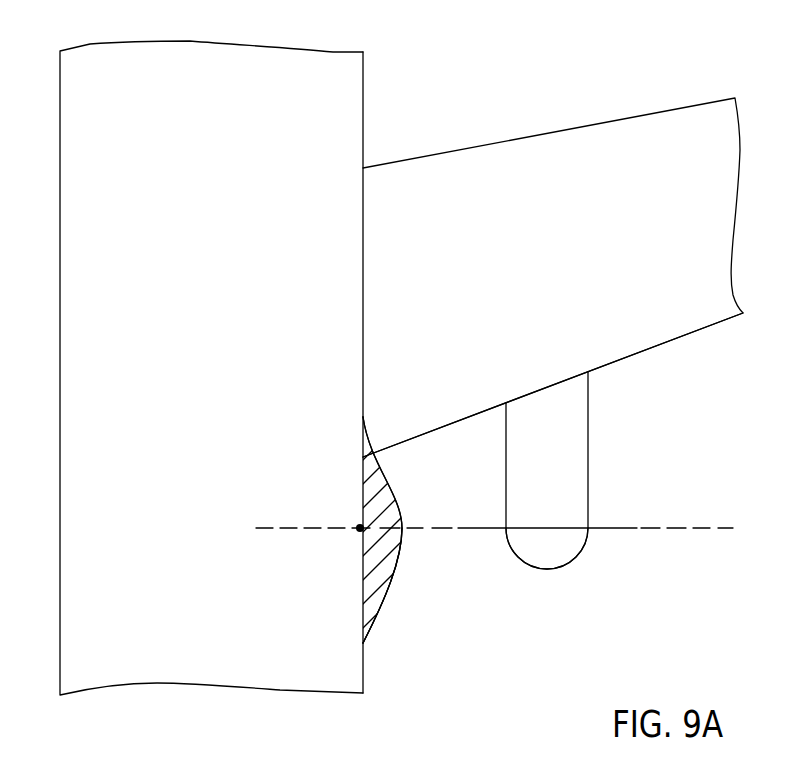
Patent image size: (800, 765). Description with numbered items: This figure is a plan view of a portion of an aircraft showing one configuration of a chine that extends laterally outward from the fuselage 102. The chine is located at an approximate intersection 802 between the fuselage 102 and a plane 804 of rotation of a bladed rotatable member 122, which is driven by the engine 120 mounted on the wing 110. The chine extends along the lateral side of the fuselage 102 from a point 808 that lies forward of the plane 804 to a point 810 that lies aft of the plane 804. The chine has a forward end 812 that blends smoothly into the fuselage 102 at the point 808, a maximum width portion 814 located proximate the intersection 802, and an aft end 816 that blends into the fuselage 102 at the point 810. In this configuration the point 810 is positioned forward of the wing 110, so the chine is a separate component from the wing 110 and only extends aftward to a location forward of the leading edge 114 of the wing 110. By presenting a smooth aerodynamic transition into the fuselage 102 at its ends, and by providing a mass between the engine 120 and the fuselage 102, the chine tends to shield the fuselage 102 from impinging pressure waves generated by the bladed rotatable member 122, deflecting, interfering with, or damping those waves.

The fuselage 102 is at (225, 484).
The wing 110 is at (618, 332).
The leading edge 114 is at (685, 338).
The engine 120 is at (588, 483).
The bladed rotatable member 122 is at (603, 528).
The intersection 802 is at (357, 533).
The plane of rotation 804 is at (702, 528).
The point forward of plane 808 is at (363, 673).
The point aft of plane 810 is at (363, 409).
The forward end 812 is at (383, 628).
The maximum width portion 814 is at (415, 543).
The aft end 816 is at (340, 425).